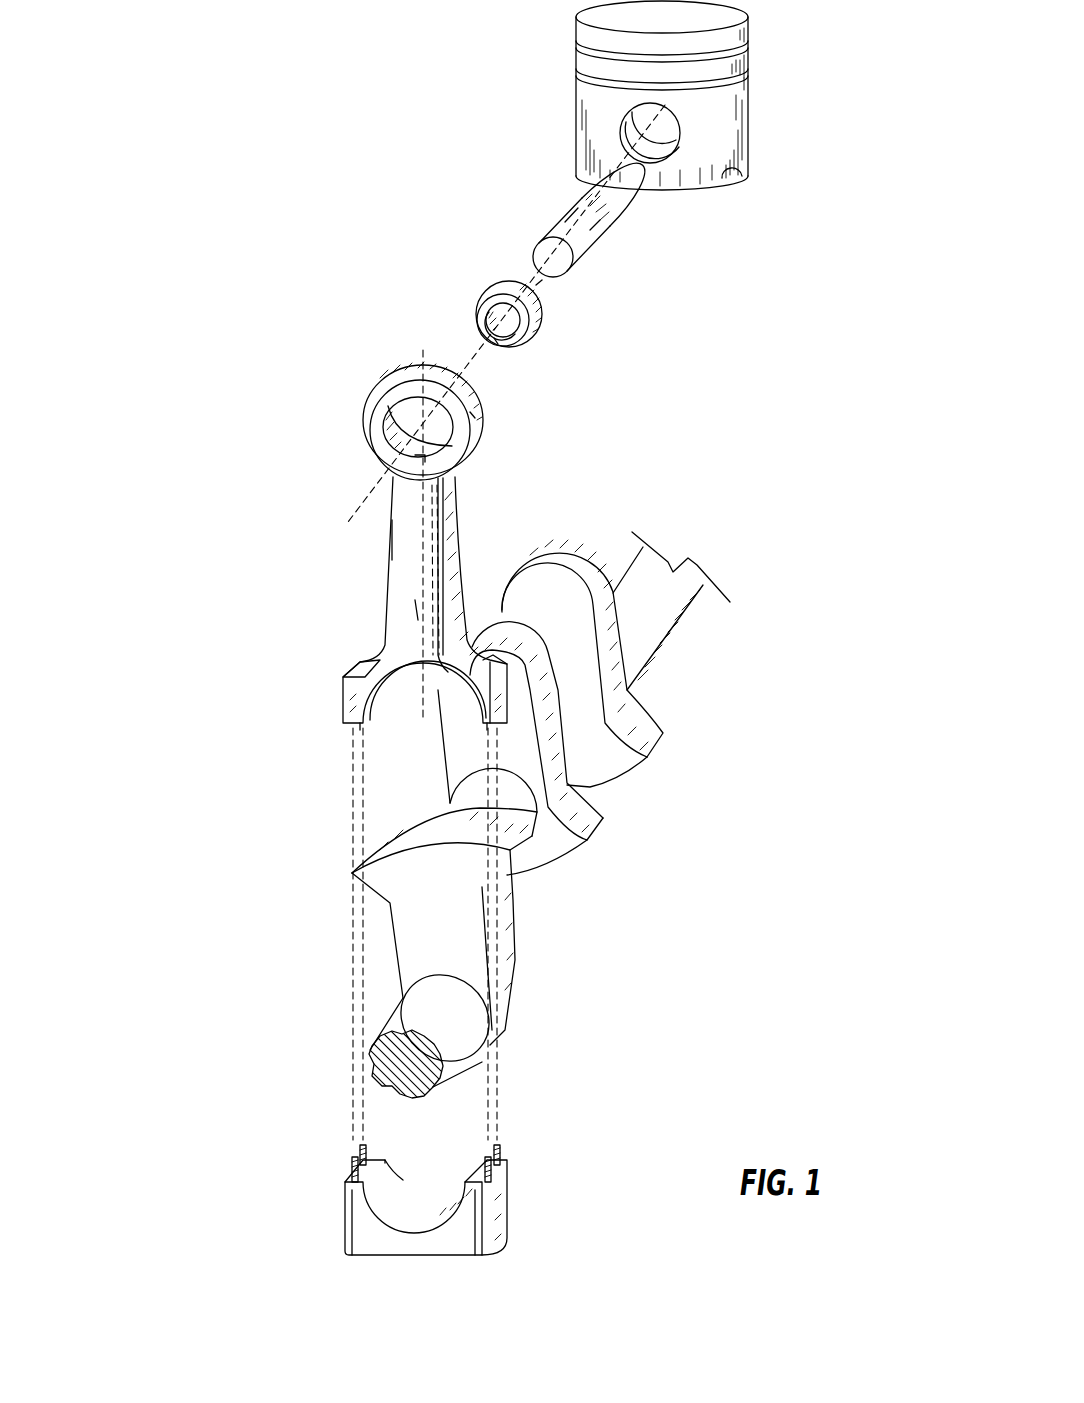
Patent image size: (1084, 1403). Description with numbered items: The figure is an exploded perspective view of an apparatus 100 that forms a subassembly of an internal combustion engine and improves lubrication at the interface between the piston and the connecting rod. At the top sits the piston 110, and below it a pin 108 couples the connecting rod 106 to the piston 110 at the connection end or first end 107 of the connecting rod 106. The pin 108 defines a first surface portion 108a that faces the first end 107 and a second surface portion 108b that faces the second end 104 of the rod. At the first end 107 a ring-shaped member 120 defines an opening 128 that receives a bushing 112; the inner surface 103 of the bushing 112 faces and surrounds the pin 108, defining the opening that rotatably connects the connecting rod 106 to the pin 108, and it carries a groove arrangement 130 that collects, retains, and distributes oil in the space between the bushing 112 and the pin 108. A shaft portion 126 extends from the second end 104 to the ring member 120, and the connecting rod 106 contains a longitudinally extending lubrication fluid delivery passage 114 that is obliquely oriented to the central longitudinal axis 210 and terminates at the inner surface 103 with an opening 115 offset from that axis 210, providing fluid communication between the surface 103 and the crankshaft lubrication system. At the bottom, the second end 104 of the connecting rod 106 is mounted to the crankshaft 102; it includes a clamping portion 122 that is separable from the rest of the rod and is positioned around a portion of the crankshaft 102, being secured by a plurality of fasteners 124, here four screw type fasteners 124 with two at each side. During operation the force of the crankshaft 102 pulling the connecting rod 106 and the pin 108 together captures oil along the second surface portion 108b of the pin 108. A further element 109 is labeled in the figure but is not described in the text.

The apparatus 100 is at (262, 176).
The crankshaft 102 is at (630, 773).
The inner surface 103 is at (496, 343).
The second end 104 is at (430, 1218).
The connecting rod 106 is at (430, 533).
The first end 107 is at (400, 378).
The pin 108 is at (547, 236).
The first surface portion 108a is at (570, 222).
The second surface portion 108b is at (592, 230).
The outer surface of bushing 109 is at (540, 284).
The piston 110 is at (748, 102).
The bushing 112 is at (490, 298).
The lubrication fluid delivery passage 114 is at (445, 502).
The opening 115 is at (420, 457).
The ring-shaped member 120 is at (480, 417).
The clamping portion 122 is at (500, 1205).
The fasteners 124 is at (359, 1152).
The shaft portion 126 is at (392, 527).
The opening 128 is at (395, 440).
The groove arrangement 130 is at (481, 330).
The central longitudinal axis 210 is at (425, 612).